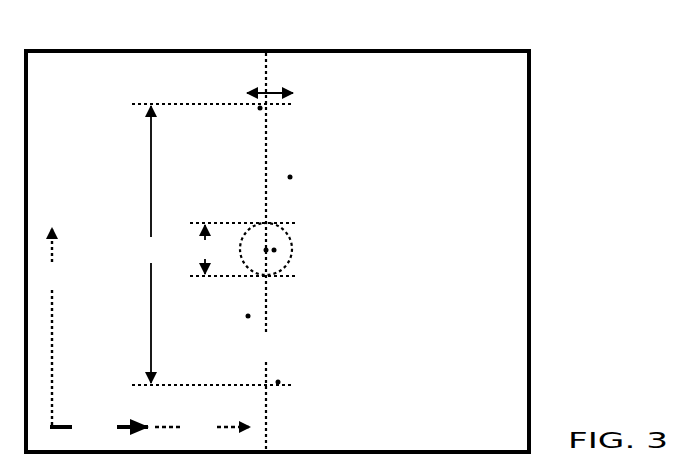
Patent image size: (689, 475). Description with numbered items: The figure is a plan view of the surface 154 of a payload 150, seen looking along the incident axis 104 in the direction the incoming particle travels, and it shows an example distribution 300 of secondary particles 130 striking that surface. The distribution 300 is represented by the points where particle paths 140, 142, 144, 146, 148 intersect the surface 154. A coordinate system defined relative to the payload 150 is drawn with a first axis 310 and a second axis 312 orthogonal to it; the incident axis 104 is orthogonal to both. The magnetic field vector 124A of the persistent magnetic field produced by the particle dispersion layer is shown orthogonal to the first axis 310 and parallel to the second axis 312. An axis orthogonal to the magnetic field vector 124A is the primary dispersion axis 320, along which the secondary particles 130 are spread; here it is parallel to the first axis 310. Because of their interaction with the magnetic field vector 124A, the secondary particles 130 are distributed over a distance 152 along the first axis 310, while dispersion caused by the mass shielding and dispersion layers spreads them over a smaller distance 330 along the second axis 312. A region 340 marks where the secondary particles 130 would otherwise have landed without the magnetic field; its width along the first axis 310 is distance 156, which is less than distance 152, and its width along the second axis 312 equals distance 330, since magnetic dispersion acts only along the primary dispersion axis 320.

The incident axis 104 is at (265, 249).
The magnetic field vector 124A is at (99, 426).
The secondary particles 130 is at (345, 70).
The particle path 140 is at (253, 112).
The particle path 142 is at (300, 177).
The particle path 144 is at (283, 253).
The particle path 146 is at (240, 316).
The particle path 148 is at (286, 376).
The payload 150 is at (529, 173).
The distance 152 is at (212, 244).
The surface 154 is at (493, 234).
The distance 156 is at (242, 249).
The distribution 300 is at (354, 105).
The first axis 310 is at (52, 326).
The second axis 312 is at (202, 426).
The primary dispersion axis 320 is at (266, 251).
The distance 330 is at (270, 93).
The region 340 is at (292, 243).